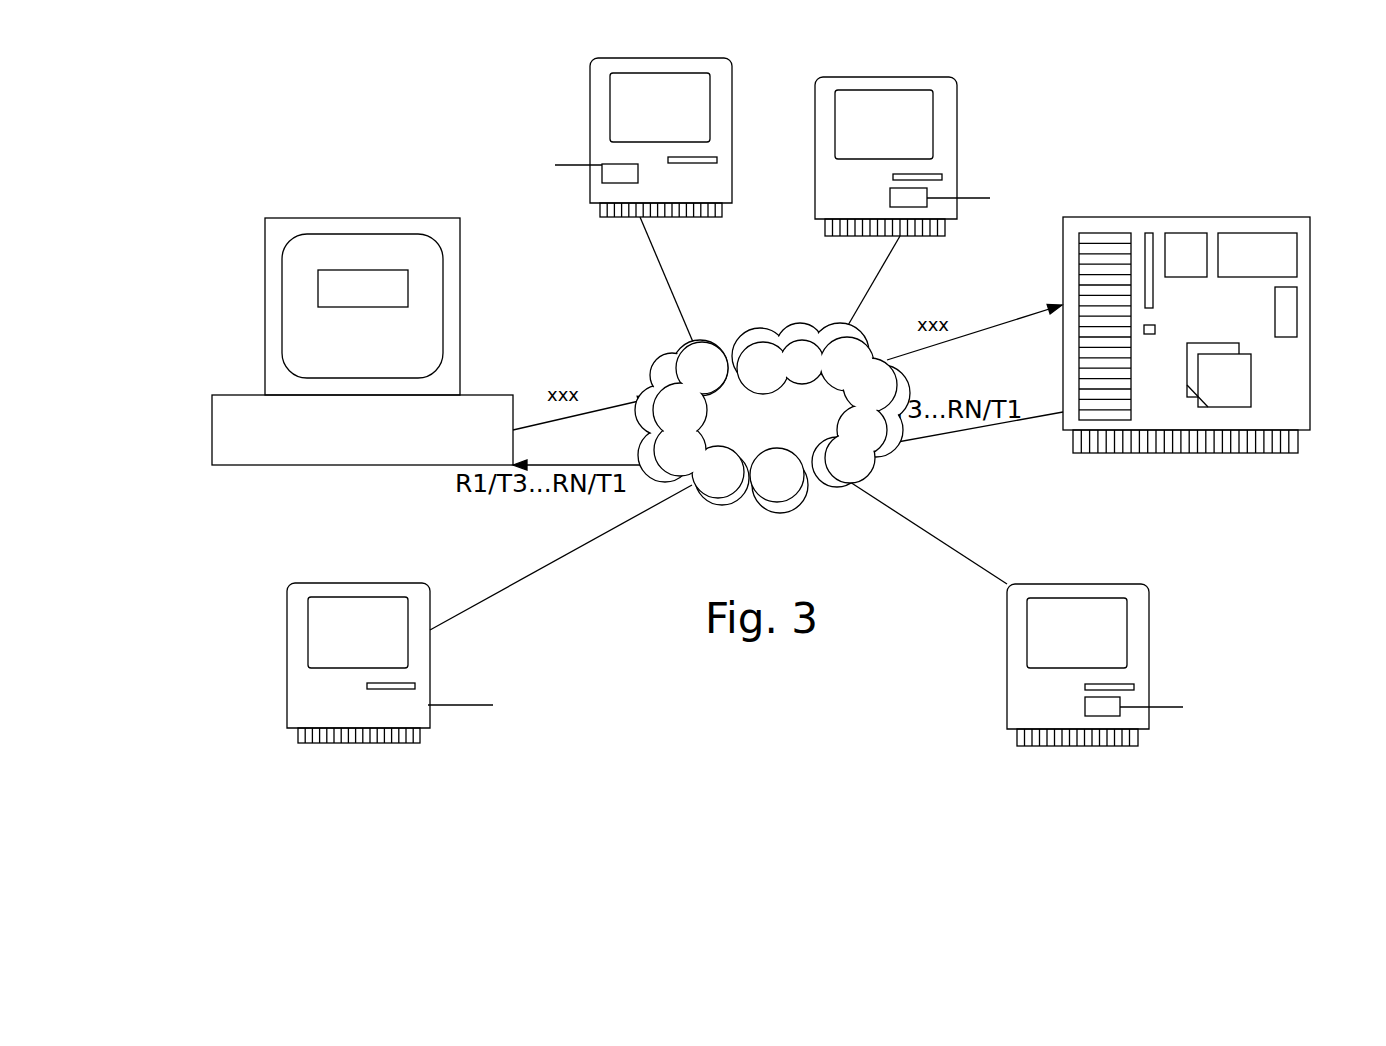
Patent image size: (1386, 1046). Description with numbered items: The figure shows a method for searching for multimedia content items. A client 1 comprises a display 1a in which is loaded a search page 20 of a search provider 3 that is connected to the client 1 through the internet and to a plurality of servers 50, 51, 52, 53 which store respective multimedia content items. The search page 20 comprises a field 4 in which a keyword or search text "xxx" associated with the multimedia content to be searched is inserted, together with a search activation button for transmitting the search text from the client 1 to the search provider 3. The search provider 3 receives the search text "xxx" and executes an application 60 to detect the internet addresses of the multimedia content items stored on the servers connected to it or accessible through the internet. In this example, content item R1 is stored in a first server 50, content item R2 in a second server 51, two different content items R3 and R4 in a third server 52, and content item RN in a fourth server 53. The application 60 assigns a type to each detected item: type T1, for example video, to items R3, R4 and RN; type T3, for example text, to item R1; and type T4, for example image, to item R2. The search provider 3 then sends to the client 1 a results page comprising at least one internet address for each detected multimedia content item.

The client 1 is at (326, 346).
The display 1a is at (326, 270).
The search page 20 is at (344, 261).
The field 4 is at (390, 295).
The first server 50 is at (638, 128).
The second server 51 is at (920, 112).
The third server 52 is at (1133, 643).
The fourth server 53 is at (300, 713).
The search provider 3 is at (1186, 366).
The application 60 is at (1220, 395).